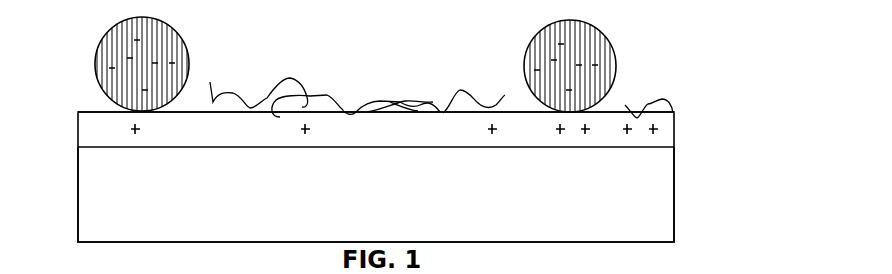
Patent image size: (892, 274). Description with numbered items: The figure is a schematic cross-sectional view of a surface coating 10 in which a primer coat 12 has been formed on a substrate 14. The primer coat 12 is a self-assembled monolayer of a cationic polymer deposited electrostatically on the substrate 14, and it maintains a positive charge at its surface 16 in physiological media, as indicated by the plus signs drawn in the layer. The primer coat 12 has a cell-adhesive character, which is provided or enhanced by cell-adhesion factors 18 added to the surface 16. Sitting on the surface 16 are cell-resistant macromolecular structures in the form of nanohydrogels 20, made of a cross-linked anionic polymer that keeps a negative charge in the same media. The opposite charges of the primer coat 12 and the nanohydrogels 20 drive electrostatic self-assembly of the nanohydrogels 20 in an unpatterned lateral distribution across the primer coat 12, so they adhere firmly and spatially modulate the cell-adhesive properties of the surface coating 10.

The surface coating 10 is at (692, 178).
The primer coat 12 is at (77, 130).
The substrate 14 is at (77, 194).
The surface of the primer coat 16 is at (92, 112).
The cell-adhesion factors 18 is at (373, 102).
The nanohydrogels 20 is at (190, 63).